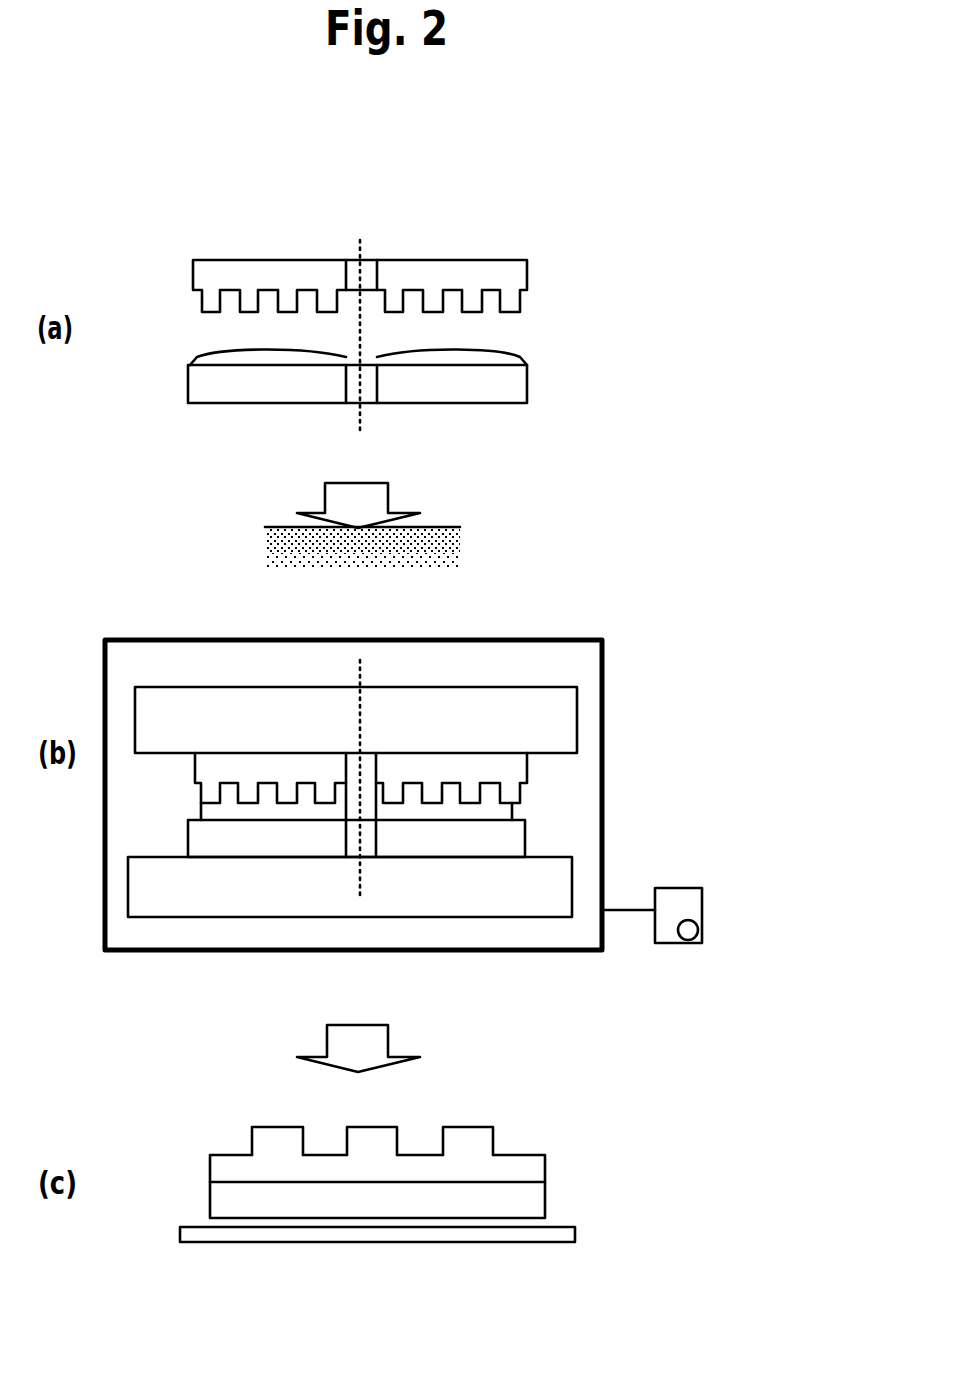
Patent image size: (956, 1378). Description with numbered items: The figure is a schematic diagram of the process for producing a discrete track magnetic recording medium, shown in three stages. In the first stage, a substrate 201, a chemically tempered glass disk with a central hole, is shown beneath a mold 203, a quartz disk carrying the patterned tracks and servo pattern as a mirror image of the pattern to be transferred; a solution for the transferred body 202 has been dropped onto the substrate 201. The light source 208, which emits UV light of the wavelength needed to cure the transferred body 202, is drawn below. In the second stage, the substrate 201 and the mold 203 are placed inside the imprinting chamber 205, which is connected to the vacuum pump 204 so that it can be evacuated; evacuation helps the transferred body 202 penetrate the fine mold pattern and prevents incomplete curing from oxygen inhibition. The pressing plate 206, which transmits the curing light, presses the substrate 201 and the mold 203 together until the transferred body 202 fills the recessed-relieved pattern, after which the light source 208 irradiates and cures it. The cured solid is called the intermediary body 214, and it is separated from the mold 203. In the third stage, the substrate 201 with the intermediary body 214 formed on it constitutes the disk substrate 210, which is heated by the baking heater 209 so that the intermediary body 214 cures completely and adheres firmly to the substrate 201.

The substrate 201 is at (500, 393).
The transferred body 202 is at (487, 357).
The mold 203 is at (515, 277).
The vacuum pump 204 is at (688, 907).
The imprinting chamber 205 is at (605, 652).
The pressing plate 206 is at (553, 712).
The light source 208 is at (432, 570).
The baking heater 209 is at (550, 1245).
The disk substrate 210 is at (447, 1135).
The intermediary body 214 is at (472, 1138).